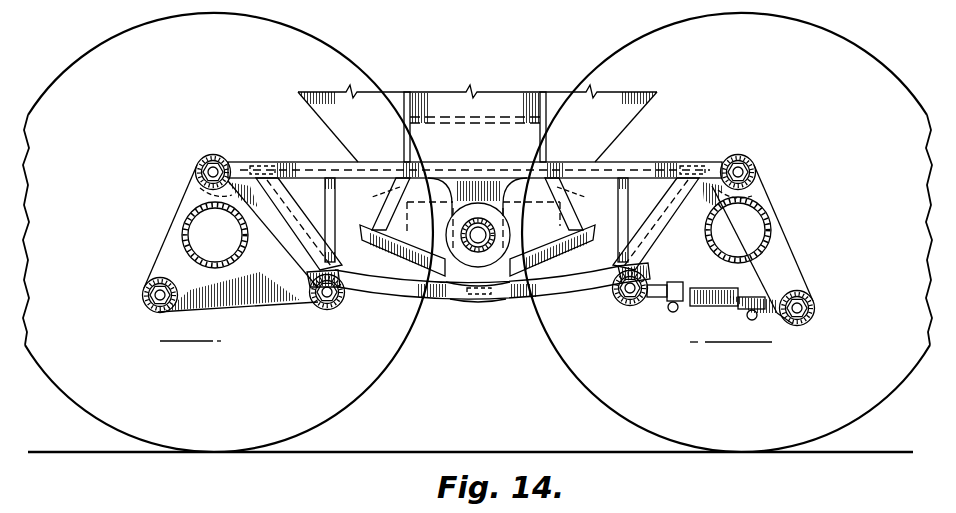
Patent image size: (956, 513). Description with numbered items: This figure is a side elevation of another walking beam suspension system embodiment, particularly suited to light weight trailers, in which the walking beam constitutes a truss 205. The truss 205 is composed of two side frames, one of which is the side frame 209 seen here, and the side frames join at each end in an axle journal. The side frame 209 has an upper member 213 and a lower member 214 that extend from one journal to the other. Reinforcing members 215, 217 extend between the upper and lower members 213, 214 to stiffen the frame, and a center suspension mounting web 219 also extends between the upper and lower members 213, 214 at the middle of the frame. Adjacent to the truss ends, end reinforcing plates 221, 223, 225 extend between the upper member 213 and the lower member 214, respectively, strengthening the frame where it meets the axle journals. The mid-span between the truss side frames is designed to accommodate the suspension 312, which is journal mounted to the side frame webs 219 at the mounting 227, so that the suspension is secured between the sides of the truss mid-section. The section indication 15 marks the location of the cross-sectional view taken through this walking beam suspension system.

The suspension 312 is at (497, 70).
The upper member 213 is at (630, 162).
The end reinforcing plate 221 is at (250, 166).
The reinforcing member 215 is at (326, 205).
The reinforcing member 217 is at (629, 222).
The end reinforcing plate 223 is at (290, 237).
The journal mounting 227 is at (470, 252).
The side frame 209 is at (447, 290).
The lower member 214 is at (592, 282).
The center suspension mounting web 219 is at (503, 273).
The end reinforcing plate 225 is at (488, 295).
The truss 205 is at (530, 310).
The section line 15- 15 is at (178, 326).